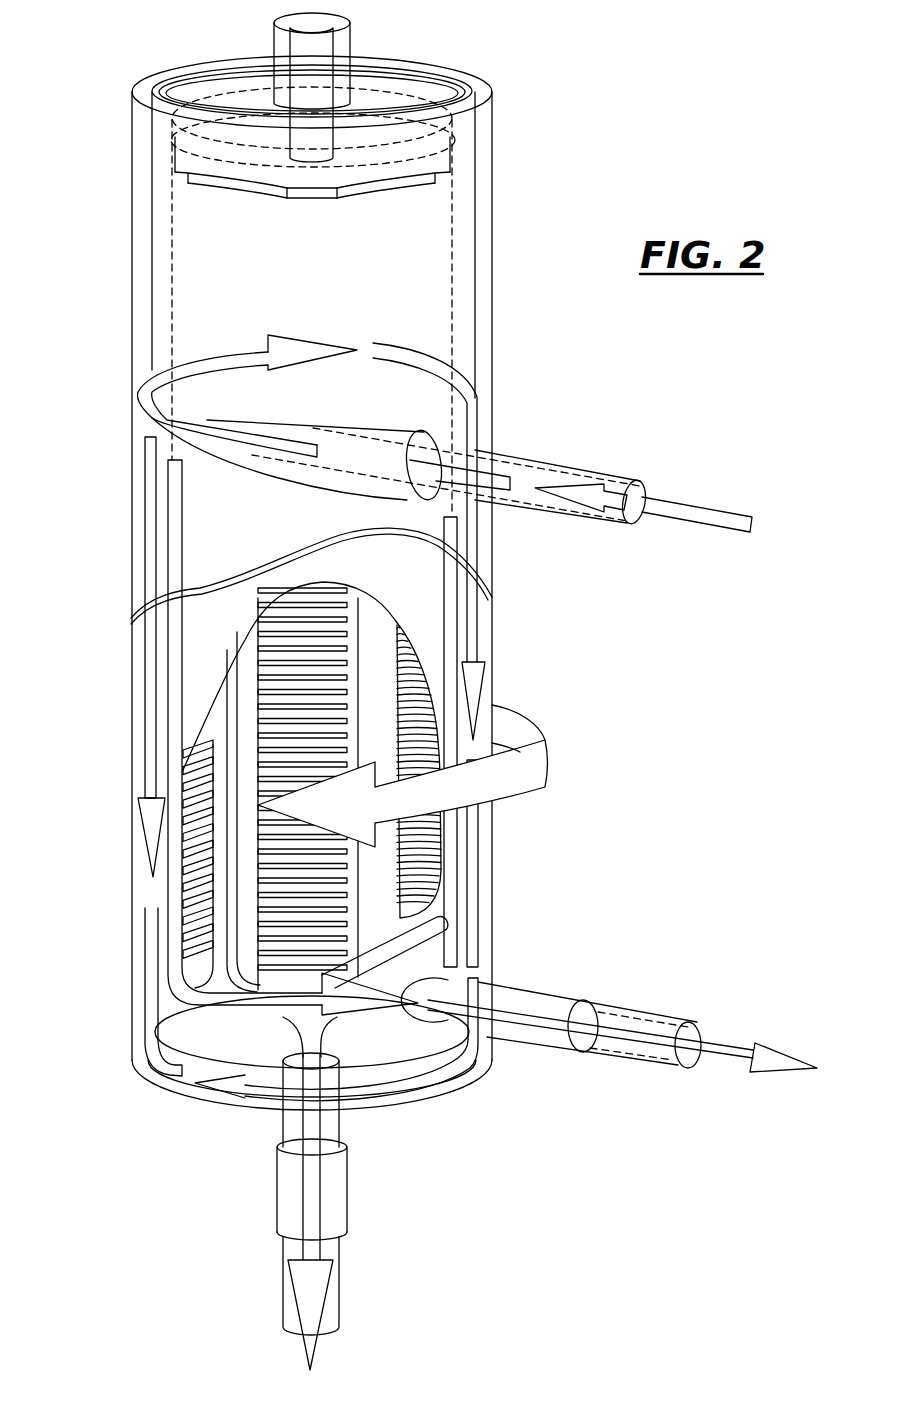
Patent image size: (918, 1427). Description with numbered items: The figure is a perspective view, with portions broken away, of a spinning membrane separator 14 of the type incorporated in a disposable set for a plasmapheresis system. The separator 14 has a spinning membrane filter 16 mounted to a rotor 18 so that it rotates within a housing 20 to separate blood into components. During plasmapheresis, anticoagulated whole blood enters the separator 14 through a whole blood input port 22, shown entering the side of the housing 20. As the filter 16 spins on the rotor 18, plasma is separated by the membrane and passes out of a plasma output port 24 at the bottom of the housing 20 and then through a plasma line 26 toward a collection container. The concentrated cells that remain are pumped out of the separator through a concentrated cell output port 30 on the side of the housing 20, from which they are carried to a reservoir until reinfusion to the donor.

The separator 14 is at (525, 213).
The spinning membrane filter 16 is at (217, 665).
The rotor 18 is at (378, 660).
The housing 20 is at (132, 210).
The whole blood input port 22 is at (550, 475).
The plasma output port 24 is at (285, 1190).
The plasma line 26 is at (330, 1313).
The concentrated cell output port 30 is at (522, 998).